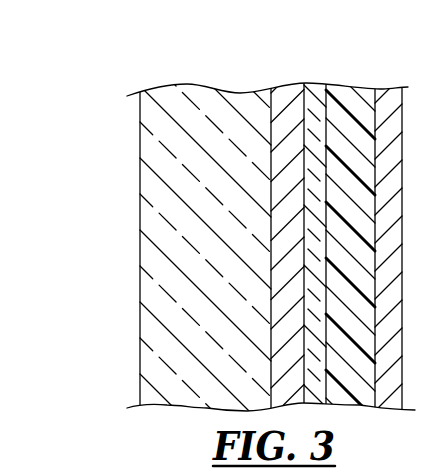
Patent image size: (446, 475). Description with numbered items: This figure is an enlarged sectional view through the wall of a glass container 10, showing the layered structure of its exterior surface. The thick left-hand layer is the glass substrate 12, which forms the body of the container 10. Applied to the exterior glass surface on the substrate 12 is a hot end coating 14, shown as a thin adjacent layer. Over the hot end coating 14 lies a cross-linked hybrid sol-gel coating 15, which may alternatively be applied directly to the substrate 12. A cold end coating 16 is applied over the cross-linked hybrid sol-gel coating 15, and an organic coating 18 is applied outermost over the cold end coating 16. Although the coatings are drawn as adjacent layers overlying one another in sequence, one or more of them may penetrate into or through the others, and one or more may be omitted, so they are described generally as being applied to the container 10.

The container 10 is at (92, 133).
The glass substrate 12 is at (165, 252).
The hot end coating 14 is at (290, 90).
The cross-linked hybrid sol-gel coating 15 is at (313, 88).
The cold end coating 16 is at (348, 93).
The organic coating 18 is at (390, 98).